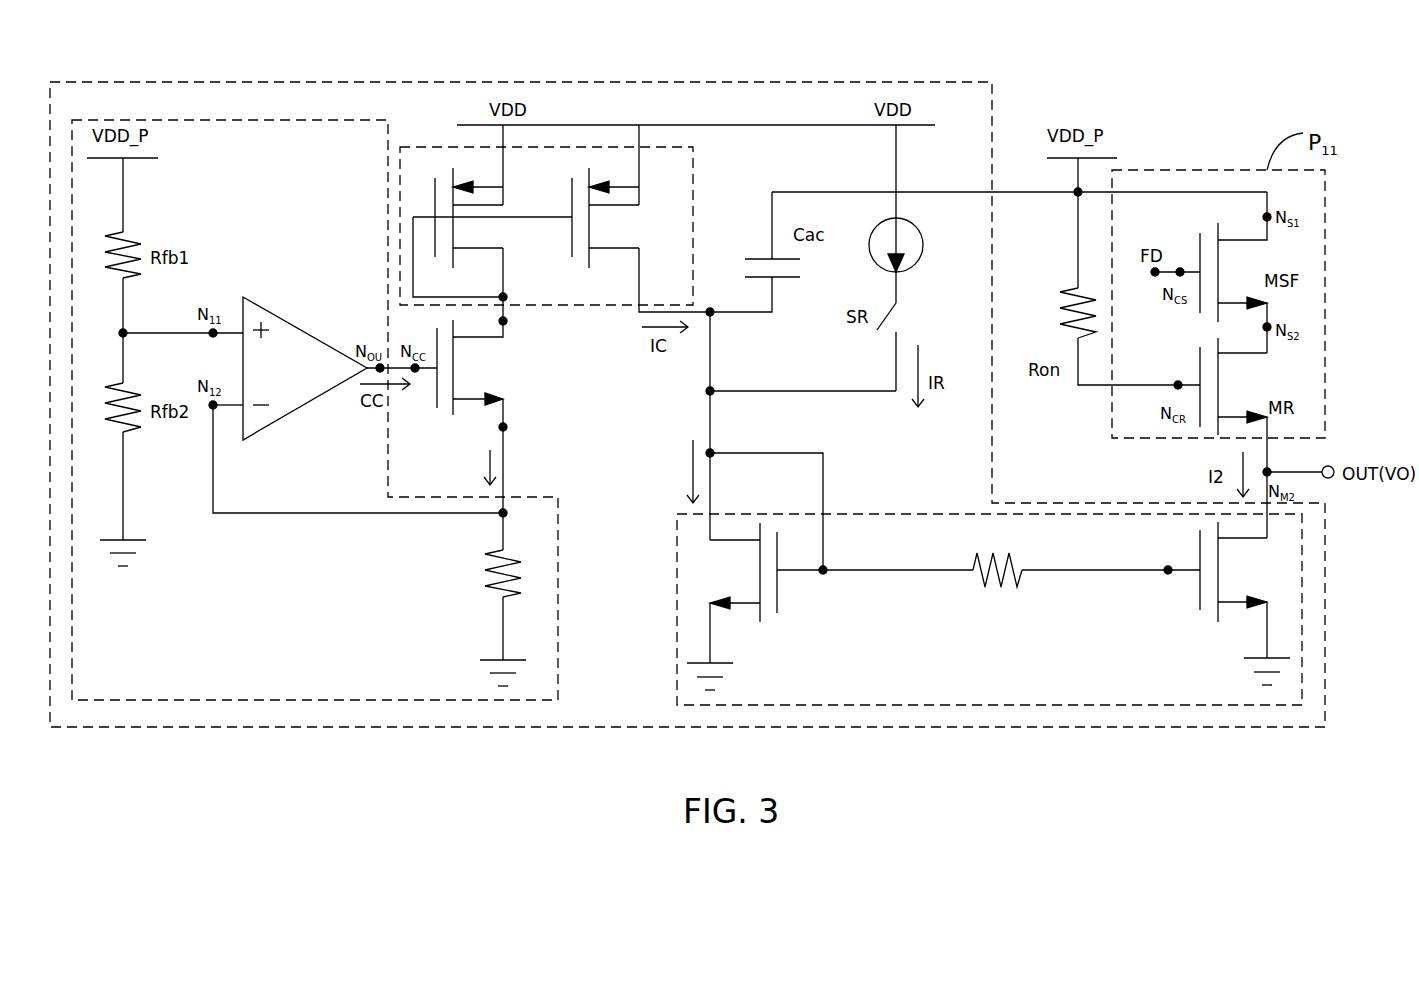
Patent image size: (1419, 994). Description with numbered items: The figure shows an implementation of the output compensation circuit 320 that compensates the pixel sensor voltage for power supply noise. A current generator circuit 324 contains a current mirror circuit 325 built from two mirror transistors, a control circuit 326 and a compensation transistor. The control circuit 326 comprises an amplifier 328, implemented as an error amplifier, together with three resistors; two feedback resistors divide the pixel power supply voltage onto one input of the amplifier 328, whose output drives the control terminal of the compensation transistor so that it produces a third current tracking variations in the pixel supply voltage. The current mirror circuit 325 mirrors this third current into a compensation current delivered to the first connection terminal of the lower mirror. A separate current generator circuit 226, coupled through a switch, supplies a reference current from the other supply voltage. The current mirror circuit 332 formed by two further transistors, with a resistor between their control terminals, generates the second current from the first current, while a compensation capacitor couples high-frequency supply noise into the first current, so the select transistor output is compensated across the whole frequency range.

The output compensation circuit 320 is at (767, 82).
The amplifier 328 is at (285, 315).
The current mirror circuit 325 is at (517, 305).
The current generator circuit 324 is at (563, 340).
The control circuit 326 is at (523, 497).
The current generator circuit 226 is at (923, 242).
The current mirror circuit 332 is at (1302, 607).